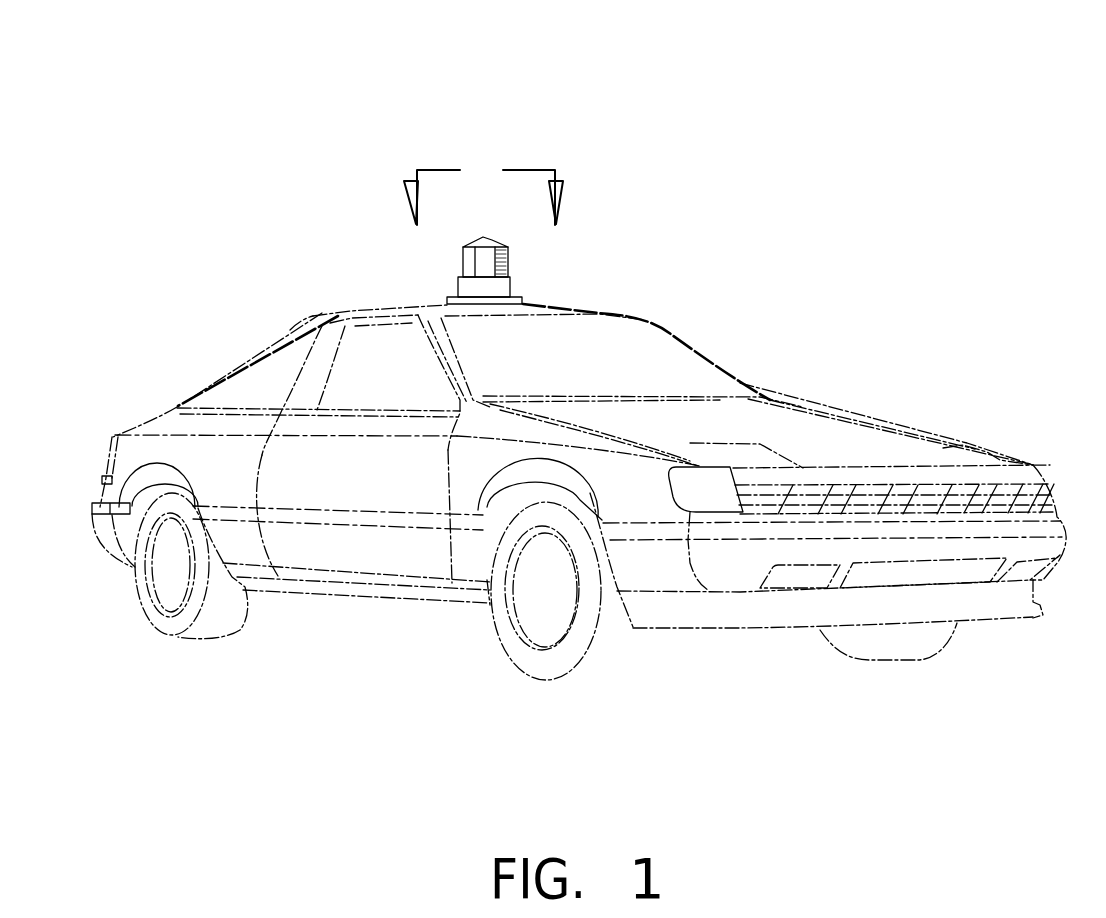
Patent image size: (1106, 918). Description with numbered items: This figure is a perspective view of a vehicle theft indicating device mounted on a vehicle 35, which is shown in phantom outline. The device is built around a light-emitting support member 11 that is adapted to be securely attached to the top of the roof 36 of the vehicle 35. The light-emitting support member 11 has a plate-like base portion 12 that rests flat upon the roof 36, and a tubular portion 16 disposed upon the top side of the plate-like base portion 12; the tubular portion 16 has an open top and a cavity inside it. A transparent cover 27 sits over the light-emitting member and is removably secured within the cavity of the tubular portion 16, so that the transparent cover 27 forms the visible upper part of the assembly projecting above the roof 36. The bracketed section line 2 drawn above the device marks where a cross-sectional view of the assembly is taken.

The section line 2- 2 is at (484, 179).
The emergency light assembly 11 is at (521, 169).
The mounting plate 12 is at (522, 302).
The housing base 16 is at (498, 290).
The lens cap 27 is at (483, 250).
The vehicle hood 35 is at (747, 420).
The vehicle roof 36 is at (347, 313).